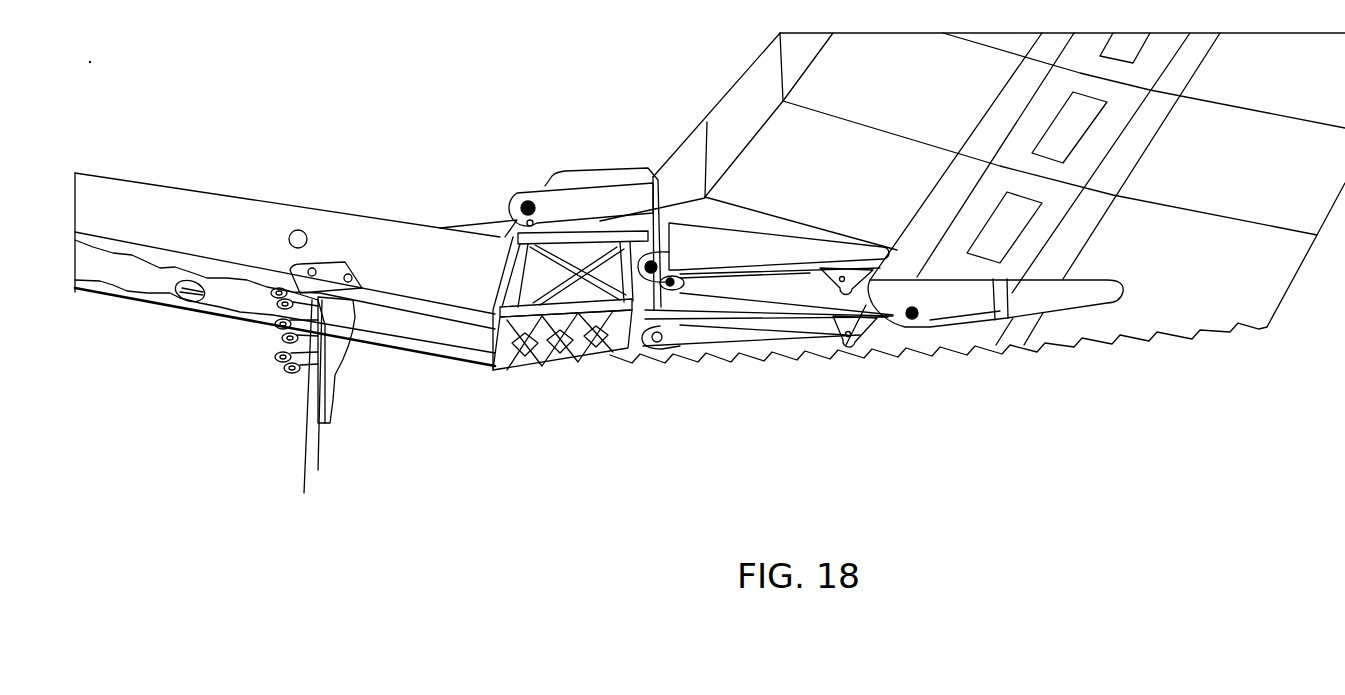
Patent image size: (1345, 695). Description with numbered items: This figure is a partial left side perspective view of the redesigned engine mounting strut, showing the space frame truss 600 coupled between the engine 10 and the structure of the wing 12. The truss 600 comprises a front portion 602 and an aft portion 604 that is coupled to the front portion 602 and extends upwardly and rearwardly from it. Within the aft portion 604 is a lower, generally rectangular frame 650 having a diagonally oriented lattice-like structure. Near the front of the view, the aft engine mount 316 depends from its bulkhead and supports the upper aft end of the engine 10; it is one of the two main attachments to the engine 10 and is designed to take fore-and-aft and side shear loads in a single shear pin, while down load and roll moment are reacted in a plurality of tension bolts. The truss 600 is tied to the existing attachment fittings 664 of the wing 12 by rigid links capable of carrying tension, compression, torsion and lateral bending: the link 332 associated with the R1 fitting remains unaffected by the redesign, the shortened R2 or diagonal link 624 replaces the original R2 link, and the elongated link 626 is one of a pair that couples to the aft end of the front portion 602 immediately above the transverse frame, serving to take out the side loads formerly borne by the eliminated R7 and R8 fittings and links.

The engine 10 is at (222, 505).
The wing 12 is at (1212, 332).
The aft engine mount 316 is at (345, 372).
The R8 link 332 is at (483, 228).
The truss 600 is at (370, 152).
The front portion 602 is at (383, 425).
The aft portion 604 is at (520, 380).
The diagonal link 624 is at (676, 332).
The elongated link 626 is at (622, 172).
The lower frame 650 is at (575, 352).
The attachment fittings 664 is at (525, 199).